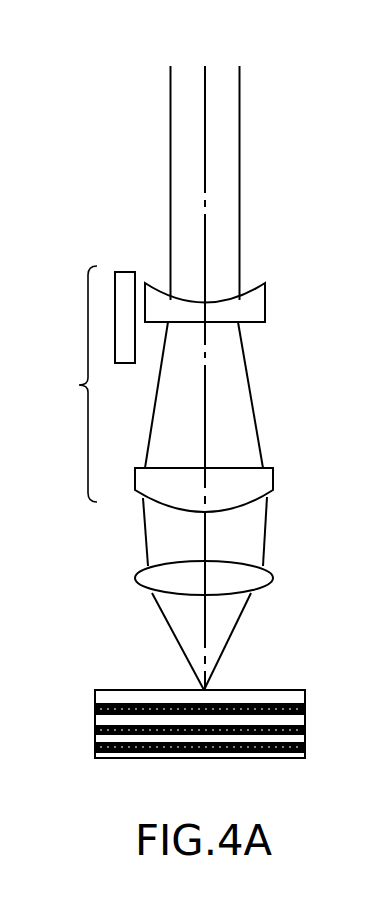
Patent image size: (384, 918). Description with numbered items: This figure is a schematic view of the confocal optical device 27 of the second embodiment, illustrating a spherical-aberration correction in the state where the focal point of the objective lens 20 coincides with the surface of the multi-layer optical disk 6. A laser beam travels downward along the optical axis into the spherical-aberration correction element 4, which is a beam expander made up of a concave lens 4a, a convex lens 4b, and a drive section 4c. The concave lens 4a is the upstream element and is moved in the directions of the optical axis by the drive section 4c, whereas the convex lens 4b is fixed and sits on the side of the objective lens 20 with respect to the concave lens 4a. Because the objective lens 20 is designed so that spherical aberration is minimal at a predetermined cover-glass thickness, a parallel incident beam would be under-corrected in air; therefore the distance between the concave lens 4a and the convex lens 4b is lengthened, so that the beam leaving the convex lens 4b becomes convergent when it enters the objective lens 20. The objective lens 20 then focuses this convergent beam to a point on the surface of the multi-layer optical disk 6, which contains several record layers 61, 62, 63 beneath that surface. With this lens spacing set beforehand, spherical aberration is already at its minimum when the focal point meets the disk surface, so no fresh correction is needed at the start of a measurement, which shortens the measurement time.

The confocal optical device 27 is at (312, 71).
The spherical-aberration correction element 4 is at (78, 384).
The concave lens 4a is at (266, 298).
The convex lens 4b is at (274, 478).
The drive section 4c is at (125, 363).
The objective lens 20 is at (140, 578).
The multi-layer optical disk 6 is at (97, 693).
The record layer 61 is at (95, 708).
The record layer 62 is at (95, 728).
The record layer 63 is at (95, 747).